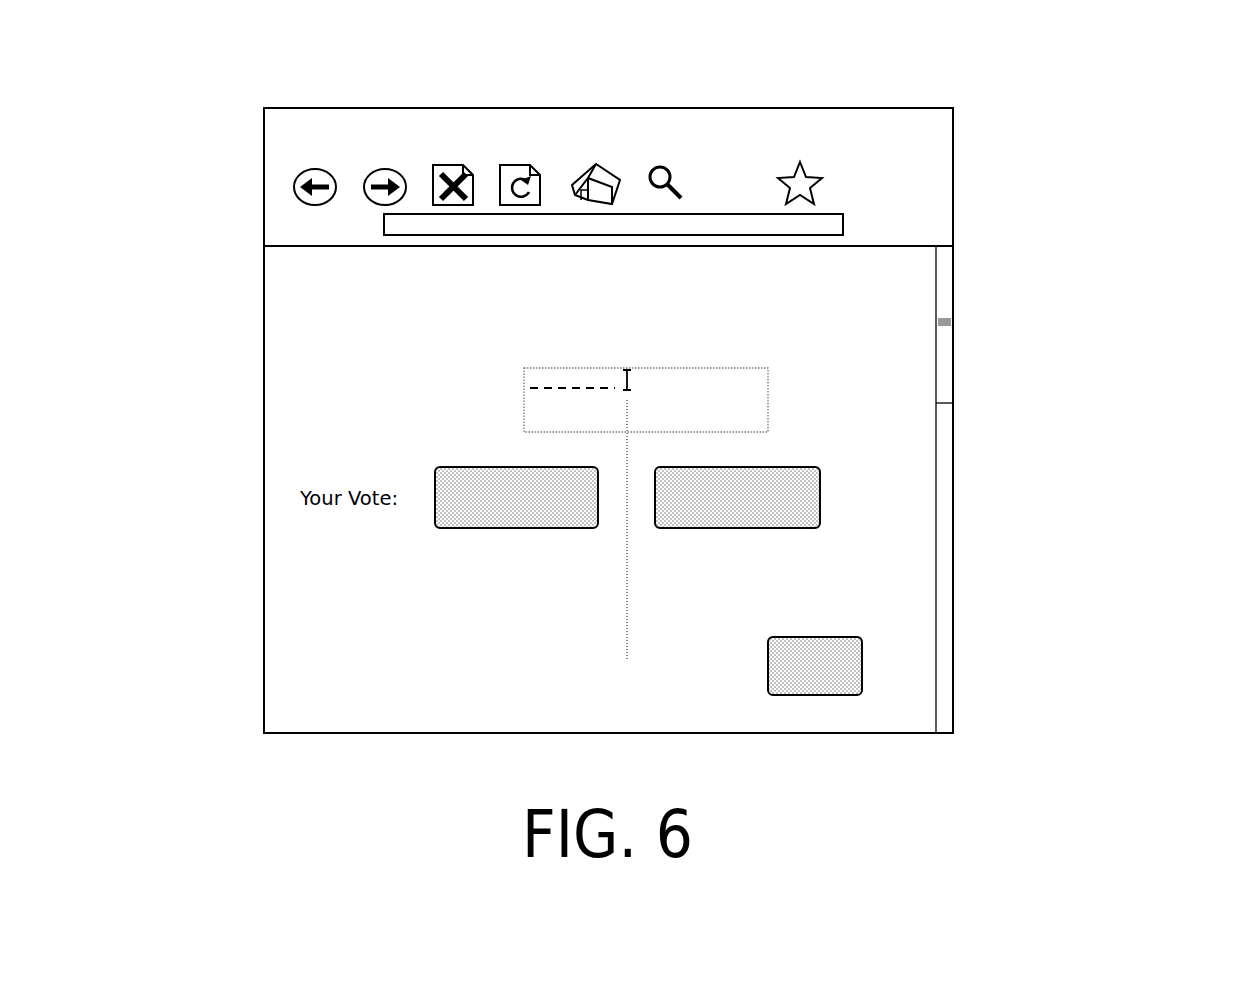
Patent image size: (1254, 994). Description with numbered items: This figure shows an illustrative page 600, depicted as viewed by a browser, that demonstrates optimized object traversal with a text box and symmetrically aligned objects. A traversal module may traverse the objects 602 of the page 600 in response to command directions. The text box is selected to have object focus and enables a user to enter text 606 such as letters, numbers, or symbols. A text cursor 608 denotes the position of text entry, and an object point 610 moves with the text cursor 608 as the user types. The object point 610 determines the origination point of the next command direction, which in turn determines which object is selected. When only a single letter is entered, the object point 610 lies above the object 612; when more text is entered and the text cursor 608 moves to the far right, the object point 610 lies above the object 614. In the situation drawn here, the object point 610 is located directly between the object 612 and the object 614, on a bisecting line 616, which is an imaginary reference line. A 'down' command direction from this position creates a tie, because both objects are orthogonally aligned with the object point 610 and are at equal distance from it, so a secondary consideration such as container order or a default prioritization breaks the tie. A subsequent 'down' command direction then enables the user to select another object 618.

The page 600 is at (1132, 60).
The objects 602 is at (870, 405).
The text 606 is at (540, 395).
The text cursor 608 is at (613, 368).
The object point 610 is at (630, 380).
The object 612 is at (447, 548).
The object 614 is at (820, 545).
The bisecting line 616 is at (620, 645).
The object 618 is at (878, 672).